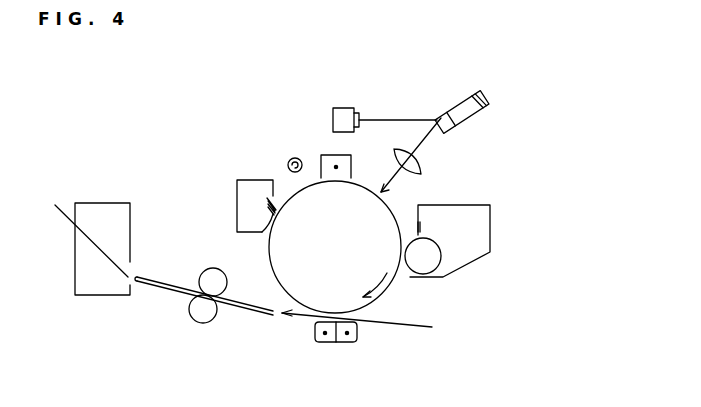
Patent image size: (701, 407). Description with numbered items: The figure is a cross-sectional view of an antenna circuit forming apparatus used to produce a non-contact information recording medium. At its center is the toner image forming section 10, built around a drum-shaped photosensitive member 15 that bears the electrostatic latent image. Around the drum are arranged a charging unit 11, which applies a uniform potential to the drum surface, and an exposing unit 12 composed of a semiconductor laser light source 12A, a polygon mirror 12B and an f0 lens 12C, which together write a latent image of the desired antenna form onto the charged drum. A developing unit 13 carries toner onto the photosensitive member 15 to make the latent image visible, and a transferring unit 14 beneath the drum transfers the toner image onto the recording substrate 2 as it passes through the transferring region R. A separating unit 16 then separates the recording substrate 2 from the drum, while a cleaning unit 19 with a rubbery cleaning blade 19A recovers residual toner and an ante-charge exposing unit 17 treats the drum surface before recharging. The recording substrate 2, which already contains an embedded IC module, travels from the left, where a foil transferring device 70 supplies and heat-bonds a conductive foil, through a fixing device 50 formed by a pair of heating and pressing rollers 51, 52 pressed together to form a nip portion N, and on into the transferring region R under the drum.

The toner image forming section 10 is at (542, 188).
The charging unit 11 is at (329, 155).
The exposing unit 12 is at (466, 138).
The semiconductor laser light source 12A is at (340, 108).
The polygon mirror 12B is at (468, 99).
The f0 lens 12C is at (422, 158).
The developing unit 13 is at (490, 228).
The transferring unit 14 is at (345, 344).
The photosensitive member 15 is at (367, 182).
The separating unit 16 is at (323, 344).
The ante-charge exposing unit (PCL) 17 is at (291, 159).
The cleaning unit 19 is at (245, 180).
The cleaning blade 19A is at (265, 208).
The recording substrate 2 is at (164, 282).
The fixing device 50 is at (193, 285).
The heating and pressing roller 51 is at (213, 268).
The heating and pressing roller 52 is at (199, 322).
The foil transferring device 70 is at (110, 203).
The nip portion N is at (224, 308).
The transferring region R is at (380, 318).